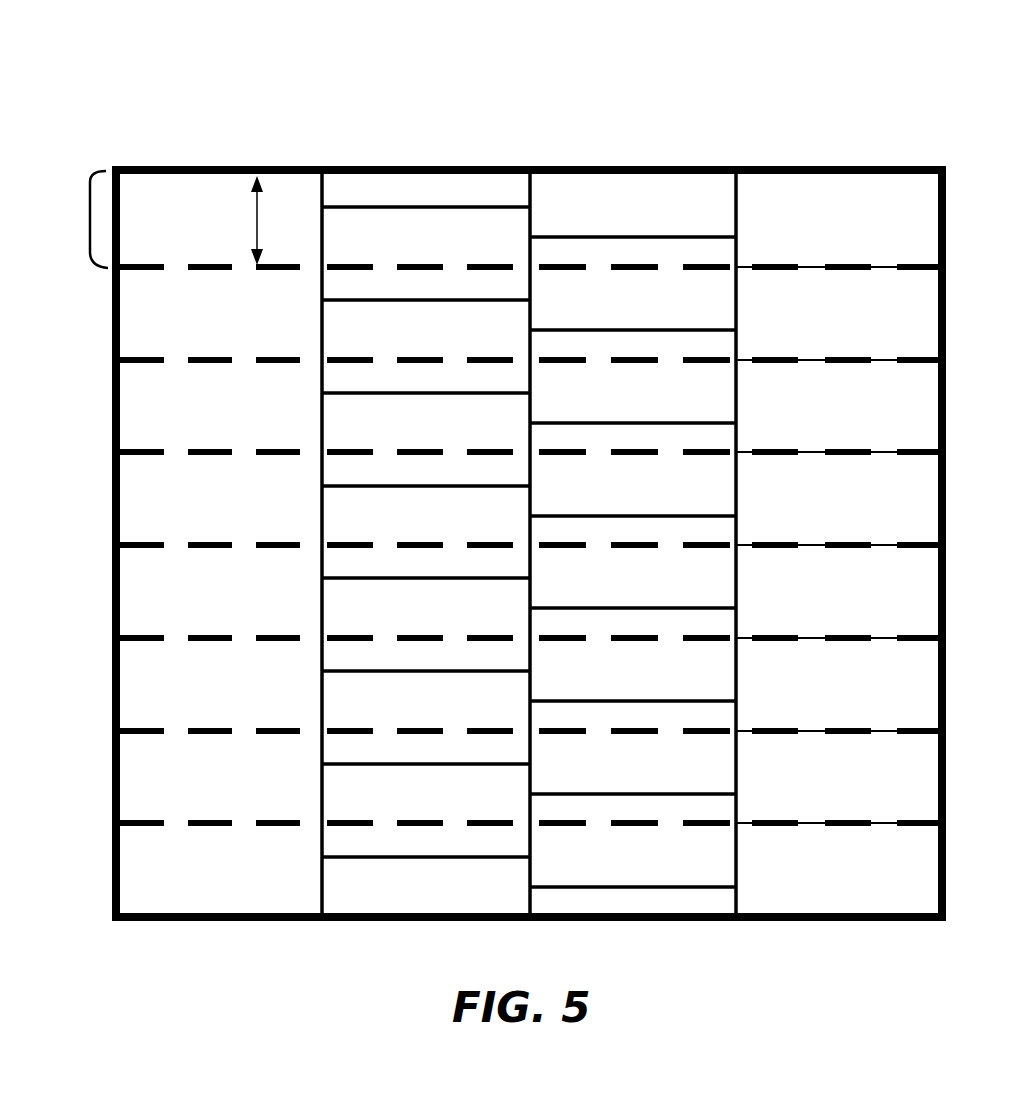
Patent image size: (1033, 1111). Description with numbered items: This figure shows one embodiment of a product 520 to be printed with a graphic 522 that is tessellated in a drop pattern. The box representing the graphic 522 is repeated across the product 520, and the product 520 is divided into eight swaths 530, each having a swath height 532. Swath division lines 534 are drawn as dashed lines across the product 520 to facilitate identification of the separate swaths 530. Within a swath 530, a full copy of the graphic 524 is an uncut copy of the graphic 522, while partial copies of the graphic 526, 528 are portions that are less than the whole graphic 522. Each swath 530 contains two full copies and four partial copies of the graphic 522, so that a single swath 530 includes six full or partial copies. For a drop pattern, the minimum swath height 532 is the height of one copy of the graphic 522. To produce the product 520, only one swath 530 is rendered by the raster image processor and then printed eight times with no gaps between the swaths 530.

The product 520 is at (128, 82).
The graphic 522 is at (803, 187).
The full copy of the graphic 524 is at (212, 188).
The partial copy of the graphic 526 is at (383, 190).
The partial copy of the graphic 528 is at (602, 188).
The swath 530 is at (89, 219).
The swath height 532 is at (279, 220).
The swath division line 534 is at (150, 268).